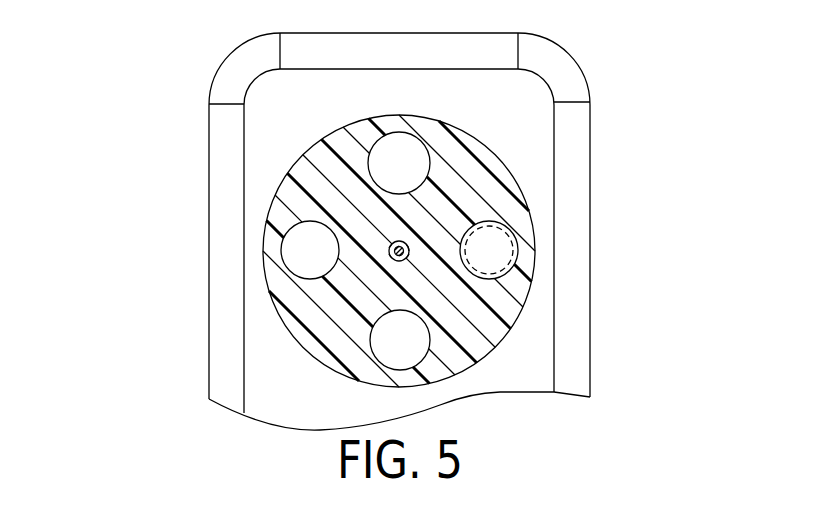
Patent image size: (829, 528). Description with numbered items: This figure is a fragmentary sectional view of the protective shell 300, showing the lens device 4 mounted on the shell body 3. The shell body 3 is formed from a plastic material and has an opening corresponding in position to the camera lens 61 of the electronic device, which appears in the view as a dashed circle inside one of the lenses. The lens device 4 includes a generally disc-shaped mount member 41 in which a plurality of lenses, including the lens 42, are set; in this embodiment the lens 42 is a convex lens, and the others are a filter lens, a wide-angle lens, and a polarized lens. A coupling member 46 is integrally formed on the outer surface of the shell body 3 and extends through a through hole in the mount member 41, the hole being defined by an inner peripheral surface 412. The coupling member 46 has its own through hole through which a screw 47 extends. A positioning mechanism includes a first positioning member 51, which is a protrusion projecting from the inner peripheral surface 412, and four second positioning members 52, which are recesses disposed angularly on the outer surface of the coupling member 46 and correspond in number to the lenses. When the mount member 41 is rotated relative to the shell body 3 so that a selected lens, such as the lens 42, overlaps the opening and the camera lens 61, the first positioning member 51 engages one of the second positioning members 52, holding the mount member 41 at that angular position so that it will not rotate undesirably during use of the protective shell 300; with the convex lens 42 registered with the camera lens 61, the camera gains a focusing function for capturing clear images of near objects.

The protective shell 300 is at (190, 82).
The shell body 3 is at (263, 143).
The lens device 4 is at (408, 240).
The mount member 41 is at (310, 318).
The lens 42 is at (514, 265).
The coupling member 46 is at (406, 257).
The screw 47 is at (389, 248).
The first positioning member 51 is at (405, 244).
The second positioning members 52 is at (390, 256).
The inner peripheral surface 412 is at (409, 248).
The camera lens 61 is at (502, 248).